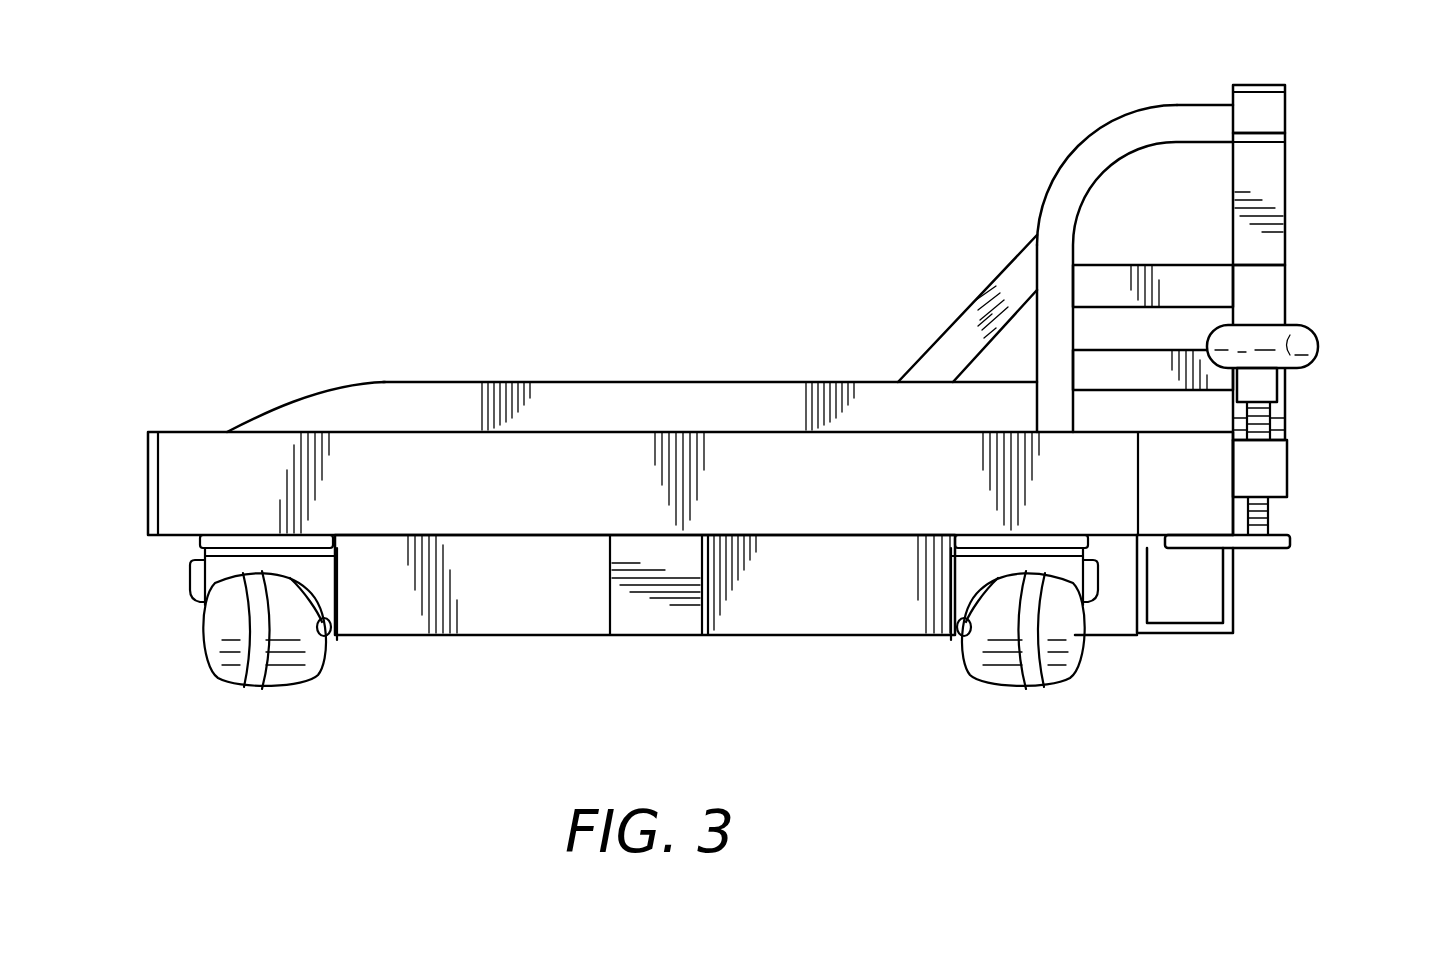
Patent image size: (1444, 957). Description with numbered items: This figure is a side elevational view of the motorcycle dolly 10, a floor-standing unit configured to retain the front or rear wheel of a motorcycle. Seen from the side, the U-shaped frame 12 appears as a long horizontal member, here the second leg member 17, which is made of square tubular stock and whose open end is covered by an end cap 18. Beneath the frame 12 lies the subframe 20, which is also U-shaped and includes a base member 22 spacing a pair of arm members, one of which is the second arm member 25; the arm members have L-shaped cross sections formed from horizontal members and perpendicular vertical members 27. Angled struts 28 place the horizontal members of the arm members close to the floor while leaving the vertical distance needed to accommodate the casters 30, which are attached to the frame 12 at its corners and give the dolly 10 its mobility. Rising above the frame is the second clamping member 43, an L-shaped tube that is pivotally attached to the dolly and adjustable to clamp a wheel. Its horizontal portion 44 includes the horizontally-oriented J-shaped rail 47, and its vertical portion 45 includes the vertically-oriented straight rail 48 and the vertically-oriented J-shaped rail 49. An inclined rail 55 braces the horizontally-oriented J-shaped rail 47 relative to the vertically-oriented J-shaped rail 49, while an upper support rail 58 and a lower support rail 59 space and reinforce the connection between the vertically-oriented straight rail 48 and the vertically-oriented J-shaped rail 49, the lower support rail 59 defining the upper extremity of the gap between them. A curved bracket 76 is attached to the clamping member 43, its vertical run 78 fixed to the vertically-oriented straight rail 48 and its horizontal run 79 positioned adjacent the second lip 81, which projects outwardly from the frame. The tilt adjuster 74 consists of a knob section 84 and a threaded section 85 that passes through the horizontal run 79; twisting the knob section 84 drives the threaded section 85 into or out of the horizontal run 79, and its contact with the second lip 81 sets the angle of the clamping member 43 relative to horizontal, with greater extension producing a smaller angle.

The motorcycle dolly 10 is at (278, 323).
The frame 12 is at (213, 420).
The second leg member 17 is at (487, 512).
The end caps 18 is at (152, 472).
The subframe 20 is at (412, 643).
The base member 22 is at (1228, 598).
The second arm member 25 is at (558, 615).
The vertical members 27 is at (590, 615).
The struts 28 is at (682, 620).
The casters 30 is at (308, 660).
The second clamping member 43 is at (1108, 120).
The horizontal portion 44 is at (617, 402).
The vertical portion 45 is at (1162, 125).
The horizontally-oriented J-shaped rail 47 is at (338, 402).
The vertically-oriented straight rail 48 is at (1273, 113).
The vertically-oriented J-shaped rail 49 is at (1077, 177).
The inclined rail 55 is at (1010, 275).
The upper support rail 58 is at (1178, 283).
The lower support rail 59 is at (1103, 370).
The tilt adjusters 74 is at (1323, 353).
The brackets 76 is at (1273, 278).
The vertical runs 78 is at (1273, 180).
The horizontal runs 79 is at (1287, 470).
The second lip 81 is at (1260, 545).
The knob sections 84 is at (1295, 342).
The threaded sections 85 is at (1287, 415).